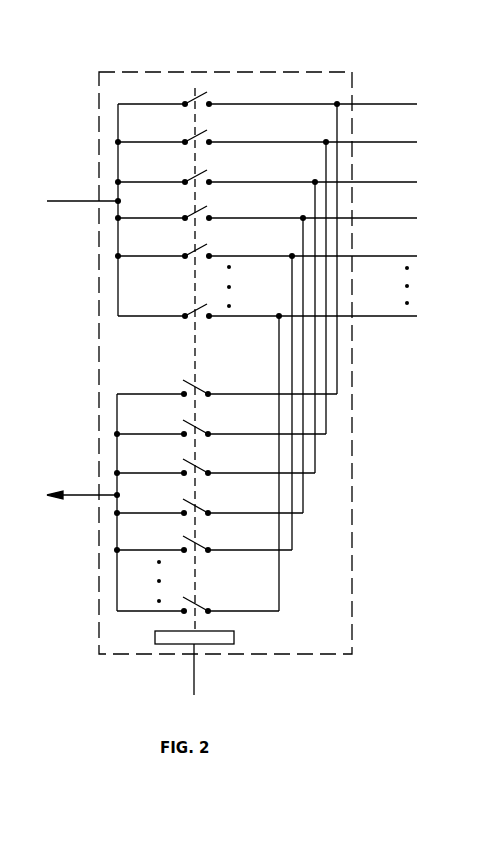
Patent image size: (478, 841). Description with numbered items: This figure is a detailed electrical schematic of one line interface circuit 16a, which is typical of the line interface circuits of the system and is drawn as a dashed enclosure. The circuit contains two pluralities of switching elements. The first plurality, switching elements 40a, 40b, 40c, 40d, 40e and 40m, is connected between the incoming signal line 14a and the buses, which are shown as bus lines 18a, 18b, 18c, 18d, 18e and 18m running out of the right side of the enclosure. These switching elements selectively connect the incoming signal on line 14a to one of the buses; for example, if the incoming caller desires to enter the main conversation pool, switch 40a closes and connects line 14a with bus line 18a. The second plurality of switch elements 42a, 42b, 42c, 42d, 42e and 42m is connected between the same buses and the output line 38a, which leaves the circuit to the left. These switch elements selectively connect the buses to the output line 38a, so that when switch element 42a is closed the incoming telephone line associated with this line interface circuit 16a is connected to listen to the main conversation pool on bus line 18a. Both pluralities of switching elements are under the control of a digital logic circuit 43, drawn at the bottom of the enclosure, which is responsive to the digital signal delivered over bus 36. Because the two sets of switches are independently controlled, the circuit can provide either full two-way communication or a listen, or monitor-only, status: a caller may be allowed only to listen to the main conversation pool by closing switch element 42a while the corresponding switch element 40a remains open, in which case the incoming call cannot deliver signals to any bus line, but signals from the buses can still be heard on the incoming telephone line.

The incoming signal line 14a is at (82, 199).
The line interface circuit 16a is at (251, 70).
The bus line 18a is at (401, 102).
The bus line 18b is at (401, 140).
The bus line 18c is at (401, 180).
The bus line 18d is at (401, 216).
The bus line 18e is at (401, 254).
The bus line 18m is at (401, 314).
The digital signal bus 36 is at (196, 681).
The output line 38a is at (88, 492).
The switching element 40a is at (165, 102).
The switching element 40b is at (165, 140).
The switching element 40c is at (165, 180).
The switching element 40d is at (165, 216).
The switching element 40e is at (165, 254).
The switching element 40m is at (165, 314).
The switch element 42a is at (257, 393).
The switch element 42b is at (257, 433).
The switch element 42c is at (257, 472).
The switch element 42d is at (257, 512).
The switch element 42e is at (257, 549).
The switch element 42m is at (259, 610).
The digital logic circuit 43 is at (236, 638).